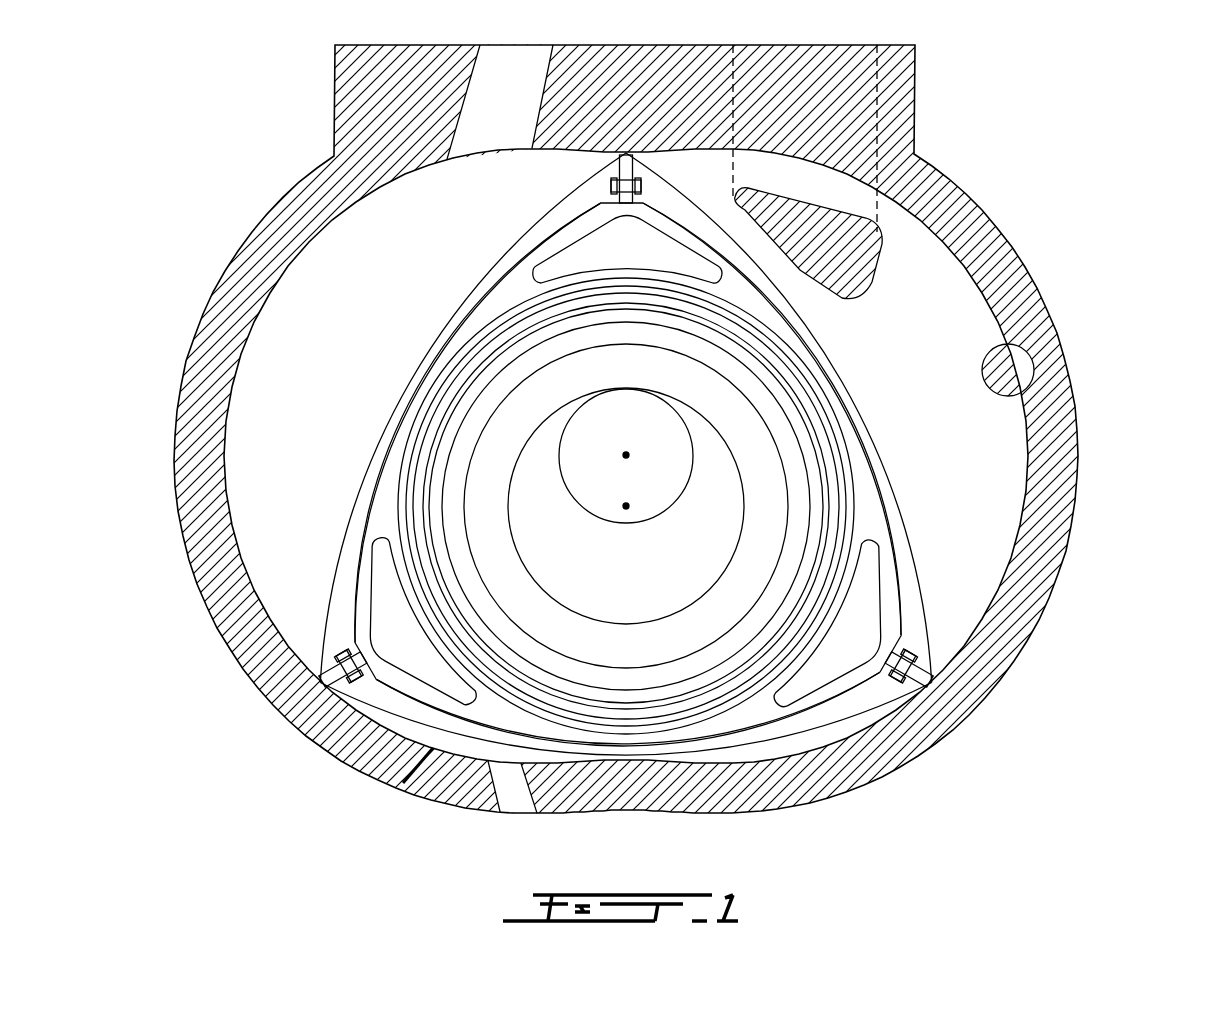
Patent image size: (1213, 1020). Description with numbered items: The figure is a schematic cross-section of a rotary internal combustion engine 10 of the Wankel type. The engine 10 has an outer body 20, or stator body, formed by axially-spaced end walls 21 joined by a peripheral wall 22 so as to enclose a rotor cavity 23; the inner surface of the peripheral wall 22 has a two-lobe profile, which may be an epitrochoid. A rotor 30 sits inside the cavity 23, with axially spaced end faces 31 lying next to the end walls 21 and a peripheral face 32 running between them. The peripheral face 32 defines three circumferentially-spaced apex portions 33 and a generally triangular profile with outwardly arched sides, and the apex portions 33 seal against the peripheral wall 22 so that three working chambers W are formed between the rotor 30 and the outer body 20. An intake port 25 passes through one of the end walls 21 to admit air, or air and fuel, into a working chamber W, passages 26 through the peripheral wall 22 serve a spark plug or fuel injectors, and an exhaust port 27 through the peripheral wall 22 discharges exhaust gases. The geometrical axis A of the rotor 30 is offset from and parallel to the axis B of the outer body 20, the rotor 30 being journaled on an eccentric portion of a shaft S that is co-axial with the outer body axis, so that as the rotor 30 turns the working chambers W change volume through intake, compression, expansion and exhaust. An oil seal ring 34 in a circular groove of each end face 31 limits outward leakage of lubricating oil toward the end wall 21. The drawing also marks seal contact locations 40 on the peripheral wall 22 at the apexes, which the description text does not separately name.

The rotary internal combustion engine 10 is at (250, 168).
The outer body 20 is at (987, 211).
The end walls 21 is at (957, 307).
The peripheral wall 22 is at (1033, 392).
The rotor cavity 23 is at (988, 519).
The intake port 25 is at (842, 240).
The passages 26 is at (510, 787).
The exhaust port 27 is at (495, 120).
The rotor 30 is at (890, 480).
The end faces 31 is at (768, 703).
The peripheral face 32 is at (923, 618).
The apex portions 33 is at (622, 152).
The oil seal ring 34 is at (727, 702).
The seal contact point 40 is at (640, 152).
The geometrical axis of the rotor A is at (623, 506).
The axis of the outer body B is at (623, 455).
The shaft S is at (655, 493).
The working chambers W is at (377, 315).